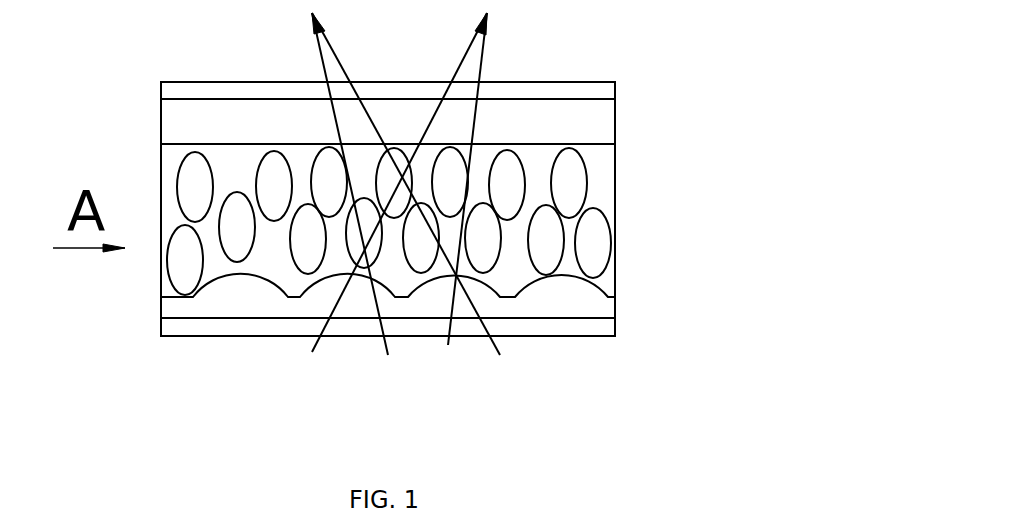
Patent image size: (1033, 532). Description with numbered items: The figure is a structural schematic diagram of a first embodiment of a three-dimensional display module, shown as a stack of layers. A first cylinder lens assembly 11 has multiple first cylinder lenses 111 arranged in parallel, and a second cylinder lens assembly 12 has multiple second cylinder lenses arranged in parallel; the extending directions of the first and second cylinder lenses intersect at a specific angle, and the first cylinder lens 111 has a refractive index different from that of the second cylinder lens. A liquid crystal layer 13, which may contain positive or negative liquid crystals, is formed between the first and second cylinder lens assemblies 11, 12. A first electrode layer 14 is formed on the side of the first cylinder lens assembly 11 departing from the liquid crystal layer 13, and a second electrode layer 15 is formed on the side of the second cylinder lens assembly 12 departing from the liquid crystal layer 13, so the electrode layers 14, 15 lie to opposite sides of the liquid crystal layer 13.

The first cylinder lens assembly 11 is at (421, 283).
The first cylinder lens 111 is at (368, 348).
The second cylinder lens assembly 12 is at (441, 120).
The liquid crystal layer 13 is at (444, 221).
The first electrode layer 14 is at (441, 356).
The second electrode layer 15 is at (441, 57).